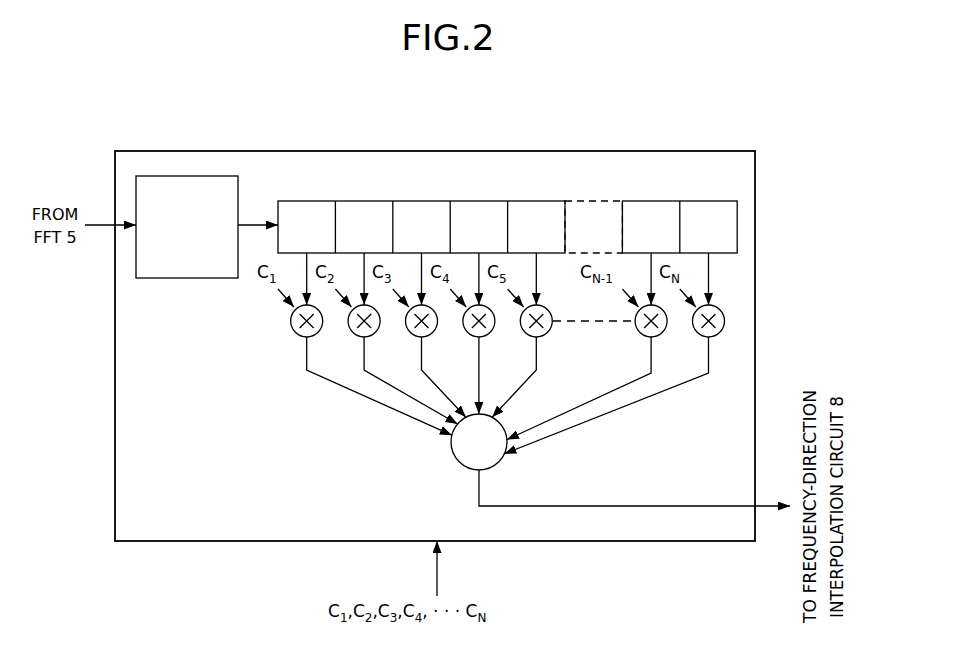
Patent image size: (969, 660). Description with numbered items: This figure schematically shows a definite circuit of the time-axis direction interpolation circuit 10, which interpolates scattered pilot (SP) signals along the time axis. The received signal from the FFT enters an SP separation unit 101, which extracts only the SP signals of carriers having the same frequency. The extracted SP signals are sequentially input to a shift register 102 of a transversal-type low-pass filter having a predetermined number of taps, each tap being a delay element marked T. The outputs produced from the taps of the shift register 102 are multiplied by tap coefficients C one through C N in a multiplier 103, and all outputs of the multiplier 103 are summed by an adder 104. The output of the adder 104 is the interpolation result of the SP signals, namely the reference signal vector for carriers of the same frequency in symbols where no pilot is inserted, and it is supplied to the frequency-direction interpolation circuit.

The time-axis direction interpolation circuit 10 is at (367, 151).
The SP separation unit 101 is at (188, 176).
The shift register 102 is at (482, 201).
The multiplier 103 is at (291, 325).
The adder 104 is at (459, 462).